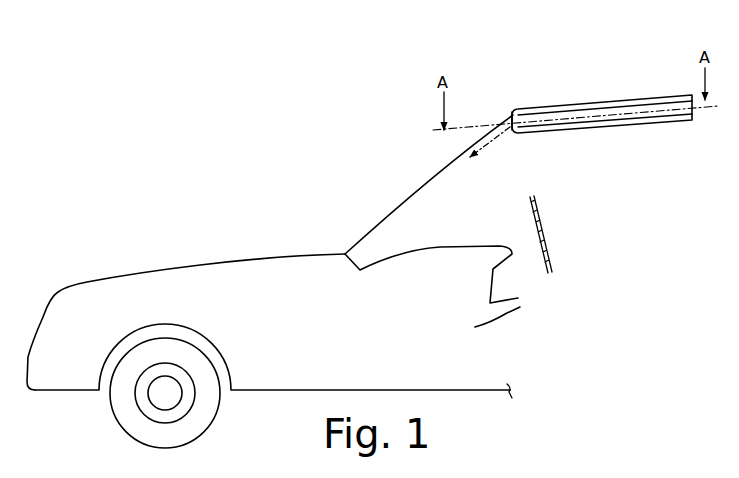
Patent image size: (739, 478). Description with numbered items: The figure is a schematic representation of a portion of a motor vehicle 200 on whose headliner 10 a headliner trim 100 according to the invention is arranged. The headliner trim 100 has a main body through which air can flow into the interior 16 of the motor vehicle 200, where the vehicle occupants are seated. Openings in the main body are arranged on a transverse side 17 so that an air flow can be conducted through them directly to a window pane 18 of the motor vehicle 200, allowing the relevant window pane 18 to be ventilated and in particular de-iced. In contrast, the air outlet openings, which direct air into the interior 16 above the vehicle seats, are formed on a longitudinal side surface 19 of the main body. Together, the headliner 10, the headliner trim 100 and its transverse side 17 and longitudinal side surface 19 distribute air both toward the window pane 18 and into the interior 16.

The motor vehicle 200 is at (310, 180).
The interior 16 is at (505, 198).
The window pane 18 is at (430, 177).
The transverse side 17 is at (512, 116).
The headliner 10 is at (573, 103).
The headliner trim 100 is at (600, 98).
The longitudinal side surface 19 is at (602, 125).